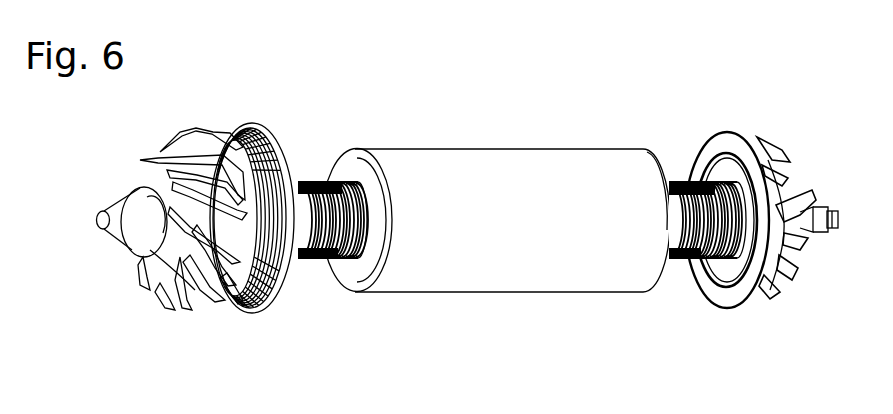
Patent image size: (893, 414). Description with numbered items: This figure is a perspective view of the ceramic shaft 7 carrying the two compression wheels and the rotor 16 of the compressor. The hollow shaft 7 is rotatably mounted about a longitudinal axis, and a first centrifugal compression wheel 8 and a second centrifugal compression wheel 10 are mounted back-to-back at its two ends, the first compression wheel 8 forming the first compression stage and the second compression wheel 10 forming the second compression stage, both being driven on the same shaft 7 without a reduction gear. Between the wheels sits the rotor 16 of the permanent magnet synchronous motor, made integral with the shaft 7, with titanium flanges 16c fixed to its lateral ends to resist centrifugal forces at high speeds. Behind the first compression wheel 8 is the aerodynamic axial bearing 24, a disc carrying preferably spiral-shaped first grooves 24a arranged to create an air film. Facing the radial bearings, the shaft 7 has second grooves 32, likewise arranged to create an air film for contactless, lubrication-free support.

The ceramic shaft 7 is at (675, 148).
The first centrifugal compression wheel 8 is at (180, 283).
The second centrifugal compression wheel 10 is at (802, 243).
The rotor 16 is at (502, 197).
The titanium flanges 16c is at (351, 170).
The axial bearing 24 is at (287, 155).
The first grooves 24a is at (243, 128).
The second grooves 32 is at (306, 258).